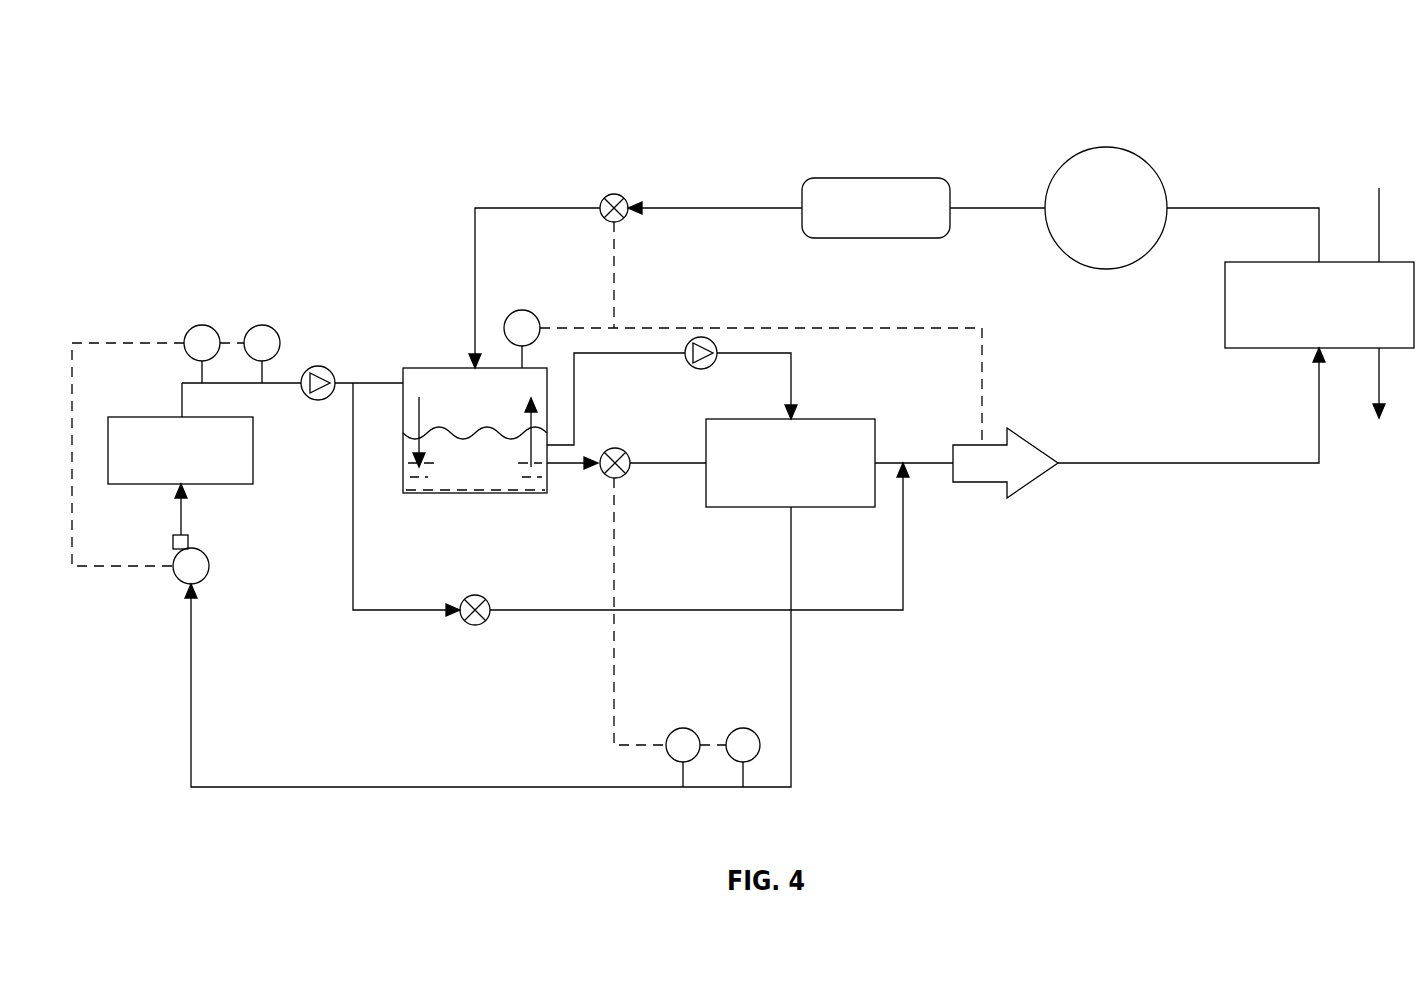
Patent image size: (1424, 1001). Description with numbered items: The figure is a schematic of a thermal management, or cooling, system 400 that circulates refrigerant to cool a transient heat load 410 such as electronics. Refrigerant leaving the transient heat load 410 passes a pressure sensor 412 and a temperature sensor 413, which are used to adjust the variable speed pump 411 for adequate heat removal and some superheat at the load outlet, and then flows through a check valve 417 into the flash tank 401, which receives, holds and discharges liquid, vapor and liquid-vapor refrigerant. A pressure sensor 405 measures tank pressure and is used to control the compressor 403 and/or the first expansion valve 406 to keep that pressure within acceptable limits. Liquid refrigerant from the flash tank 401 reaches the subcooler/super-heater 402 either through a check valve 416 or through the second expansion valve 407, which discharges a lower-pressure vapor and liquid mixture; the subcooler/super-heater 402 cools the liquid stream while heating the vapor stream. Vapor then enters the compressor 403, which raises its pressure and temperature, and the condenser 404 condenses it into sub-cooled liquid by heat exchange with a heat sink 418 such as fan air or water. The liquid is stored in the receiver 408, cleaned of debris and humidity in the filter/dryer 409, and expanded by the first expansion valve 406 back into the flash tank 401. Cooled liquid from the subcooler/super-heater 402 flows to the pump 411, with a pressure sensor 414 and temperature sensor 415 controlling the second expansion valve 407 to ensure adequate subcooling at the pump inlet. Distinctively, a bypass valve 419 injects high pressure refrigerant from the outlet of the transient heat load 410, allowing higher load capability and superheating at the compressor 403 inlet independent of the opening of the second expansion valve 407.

The thermal management system 400 is at (184, 44).
The flash tank 401 is at (426, 496).
The subcooler/super-heater 402 is at (830, 419).
The compressor 403 is at (978, 483).
The condenser 404 is at (1256, 262).
The pressure sensor 405 is at (522, 310).
The expansion valve (EV-1) 406 is at (619, 222).
The expansion valve (EV-2) 407 is at (621, 477).
The receiver 408 is at (1106, 147).
The filter/dryer 409 is at (828, 178).
The transient heat load 410 is at (232, 485).
The variable speed pump 411 is at (204, 581).
The pressure sensor 412 is at (204, 325).
The temperature sensor 413 is at (264, 325).
The pressure sensor 414 is at (685, 728).
The temperature sensor 415 is at (745, 728).
The check valve 416 is at (704, 370).
The check valve 417 is at (322, 366).
The heat sink 418 is at (1378, 203).
The bypass valve 419 is at (481, 596).